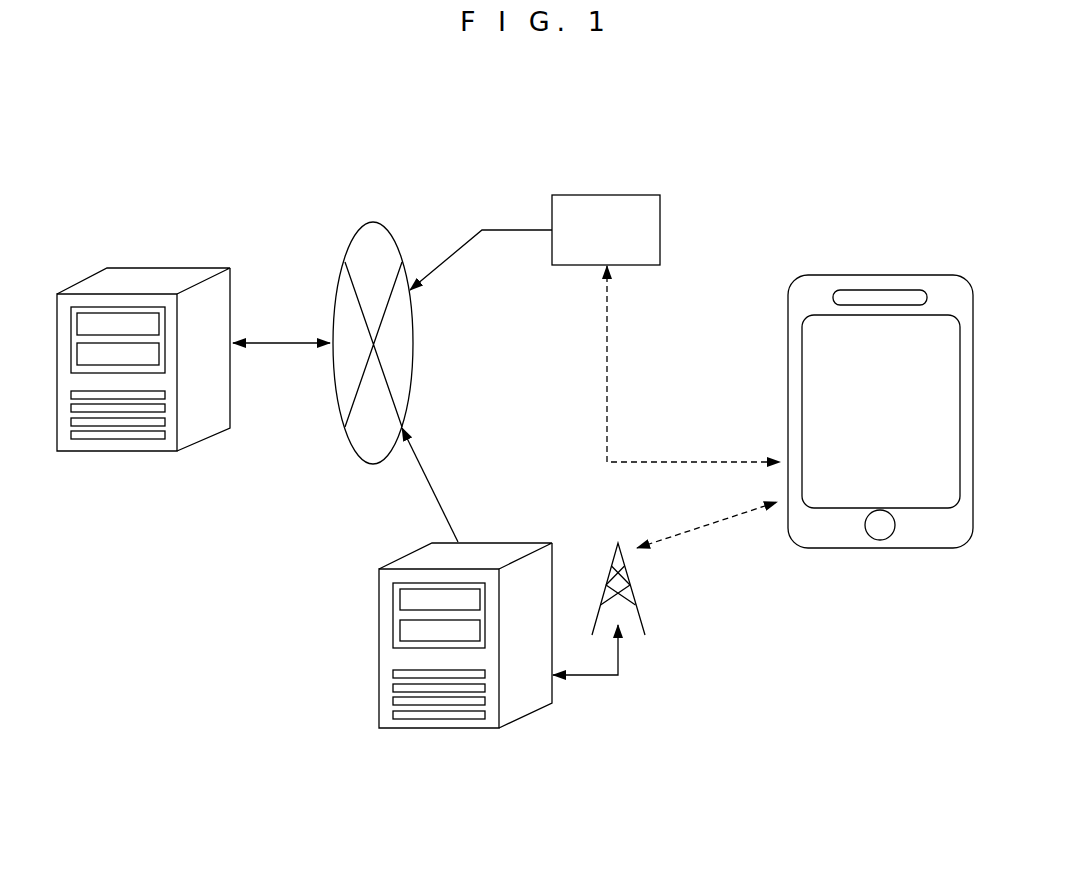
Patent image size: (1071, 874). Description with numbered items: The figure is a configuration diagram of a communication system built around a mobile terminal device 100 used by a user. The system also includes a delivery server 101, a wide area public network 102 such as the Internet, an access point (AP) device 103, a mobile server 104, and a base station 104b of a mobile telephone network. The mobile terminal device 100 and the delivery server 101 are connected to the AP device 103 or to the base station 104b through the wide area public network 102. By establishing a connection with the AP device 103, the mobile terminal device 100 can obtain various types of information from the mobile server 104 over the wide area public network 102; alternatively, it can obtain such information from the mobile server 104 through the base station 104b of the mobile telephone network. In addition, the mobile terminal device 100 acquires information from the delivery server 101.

The mobile terminal device 100 is at (878, 273).
The delivery server 101 is at (192, 266).
The wide area public network 102 is at (413, 335).
The access point (AP) device 103 is at (612, 194).
The mobile server 104 is at (497, 542).
The base station 104b is at (638, 595).